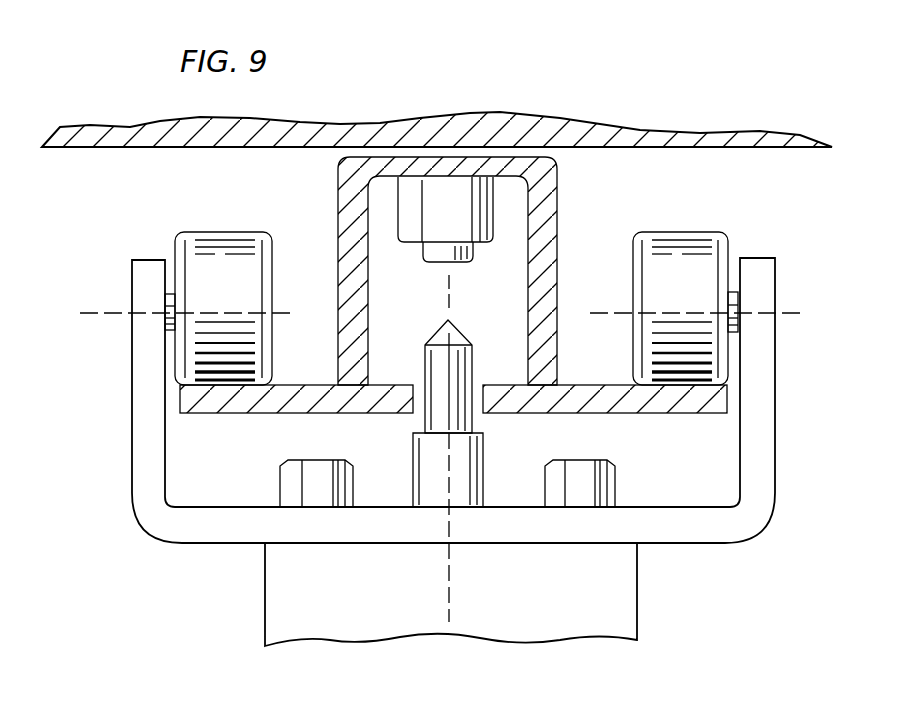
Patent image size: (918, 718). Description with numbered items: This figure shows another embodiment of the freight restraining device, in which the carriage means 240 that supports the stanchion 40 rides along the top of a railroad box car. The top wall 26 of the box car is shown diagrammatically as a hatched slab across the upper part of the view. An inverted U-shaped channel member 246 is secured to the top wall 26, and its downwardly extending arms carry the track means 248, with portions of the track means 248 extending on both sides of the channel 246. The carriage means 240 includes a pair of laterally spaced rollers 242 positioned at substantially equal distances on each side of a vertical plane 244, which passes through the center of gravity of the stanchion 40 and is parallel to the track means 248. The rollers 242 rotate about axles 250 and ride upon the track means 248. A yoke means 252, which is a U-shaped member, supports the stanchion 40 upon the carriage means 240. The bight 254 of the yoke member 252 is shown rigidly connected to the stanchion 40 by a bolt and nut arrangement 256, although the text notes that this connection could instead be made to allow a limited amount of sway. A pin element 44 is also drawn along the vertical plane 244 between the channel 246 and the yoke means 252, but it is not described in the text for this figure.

The top wall 26 is at (420, 126).
The stanchion 40 is at (354, 600).
The pin 44 is at (455, 338).
The carriage means 240 is at (776, 260).
The rollers 242 is at (258, 206).
The vertical plane 244 is at (452, 603).
The inverted U-shaped channel member 246 is at (556, 212).
The track means 248 is at (215, 415).
The axles 250 is at (163, 318).
The yoke means 252 is at (128, 456).
The bight 254 is at (200, 525).
The bolt and nut arrangement 256 is at (318, 468).